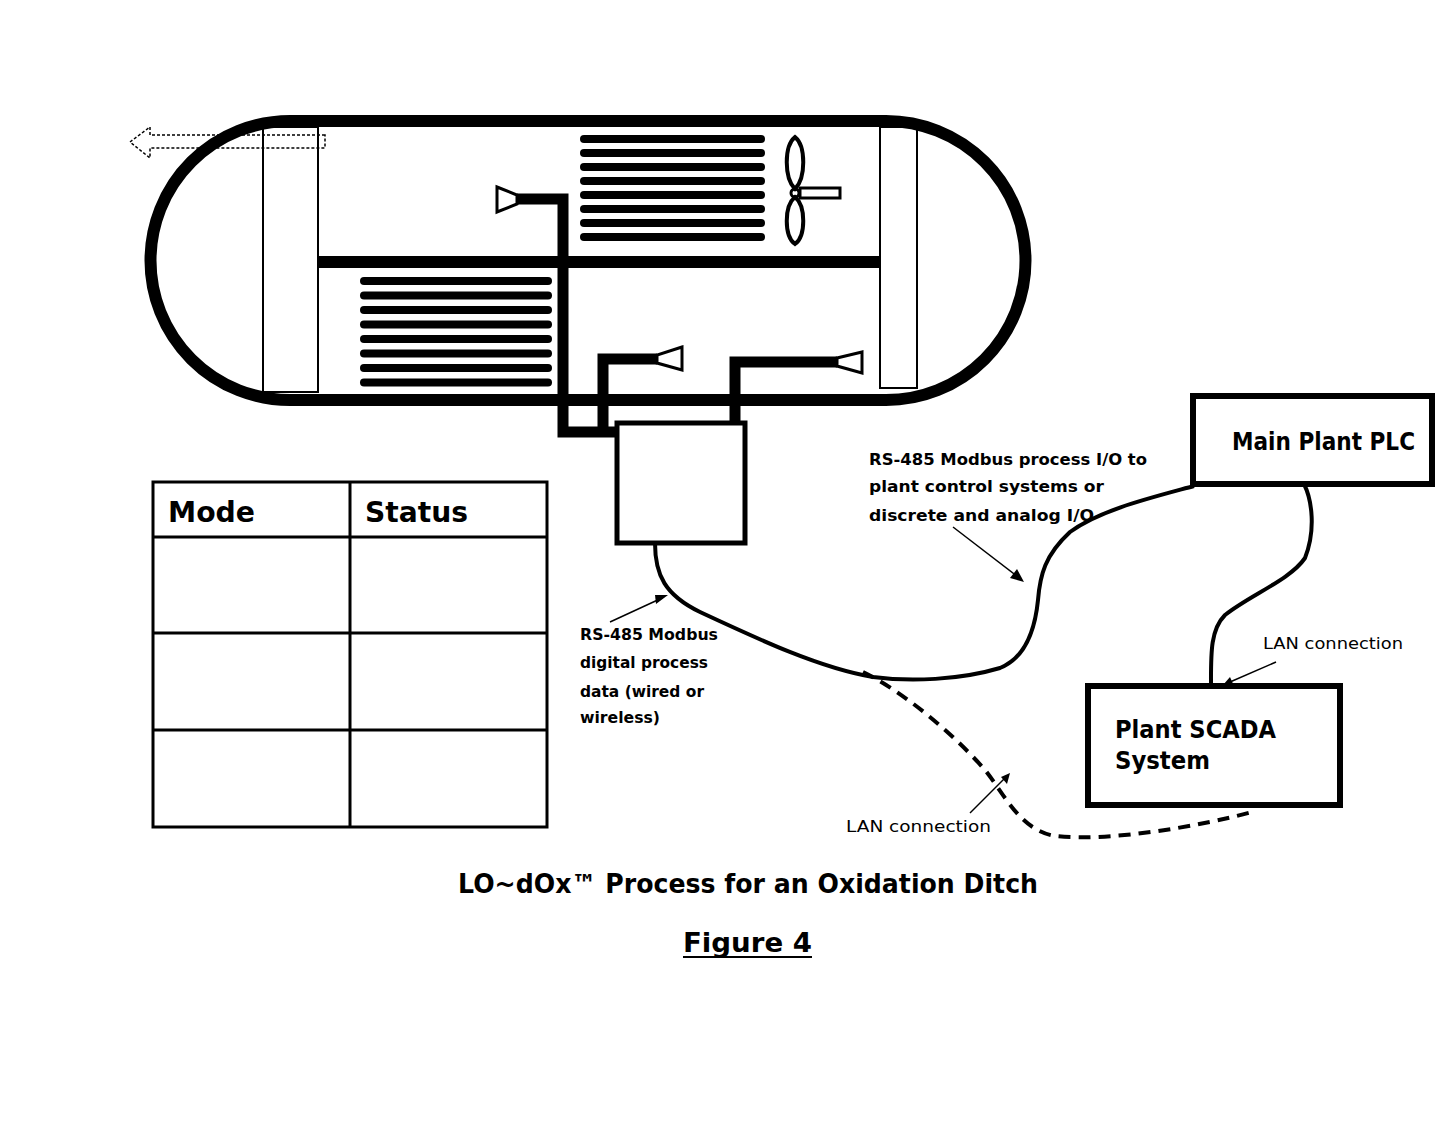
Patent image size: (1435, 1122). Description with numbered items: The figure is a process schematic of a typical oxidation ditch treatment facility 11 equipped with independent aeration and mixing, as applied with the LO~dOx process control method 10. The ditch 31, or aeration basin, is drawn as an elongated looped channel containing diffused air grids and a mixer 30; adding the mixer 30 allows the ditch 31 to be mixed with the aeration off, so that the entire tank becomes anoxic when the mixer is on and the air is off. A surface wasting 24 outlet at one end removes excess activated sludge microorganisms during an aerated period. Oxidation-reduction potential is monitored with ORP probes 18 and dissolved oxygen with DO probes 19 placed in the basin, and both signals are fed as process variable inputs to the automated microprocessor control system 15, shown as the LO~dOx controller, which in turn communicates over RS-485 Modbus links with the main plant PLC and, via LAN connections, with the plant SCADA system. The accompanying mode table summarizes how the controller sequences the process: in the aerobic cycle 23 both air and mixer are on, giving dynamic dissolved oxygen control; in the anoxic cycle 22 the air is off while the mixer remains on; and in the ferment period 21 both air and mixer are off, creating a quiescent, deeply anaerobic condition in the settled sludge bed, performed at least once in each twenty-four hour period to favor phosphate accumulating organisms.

The process control method 10 is at (376, 68).
The oxidation ditch treatment facility 11 is at (228, 358).
The automated microprocessor control system 15 is at (641, 528).
The ORP probe 18 is at (852, 378).
The DO probe 19 is at (538, 192).
The ferment period 21 is at (175, 773).
The anoxic cycle 22 is at (173, 678).
The aerobic cycle 23 is at (173, 583).
The surface wasting 24 is at (164, 136).
The mixer 30 is at (806, 176).
The ditch 31 is at (862, 143).